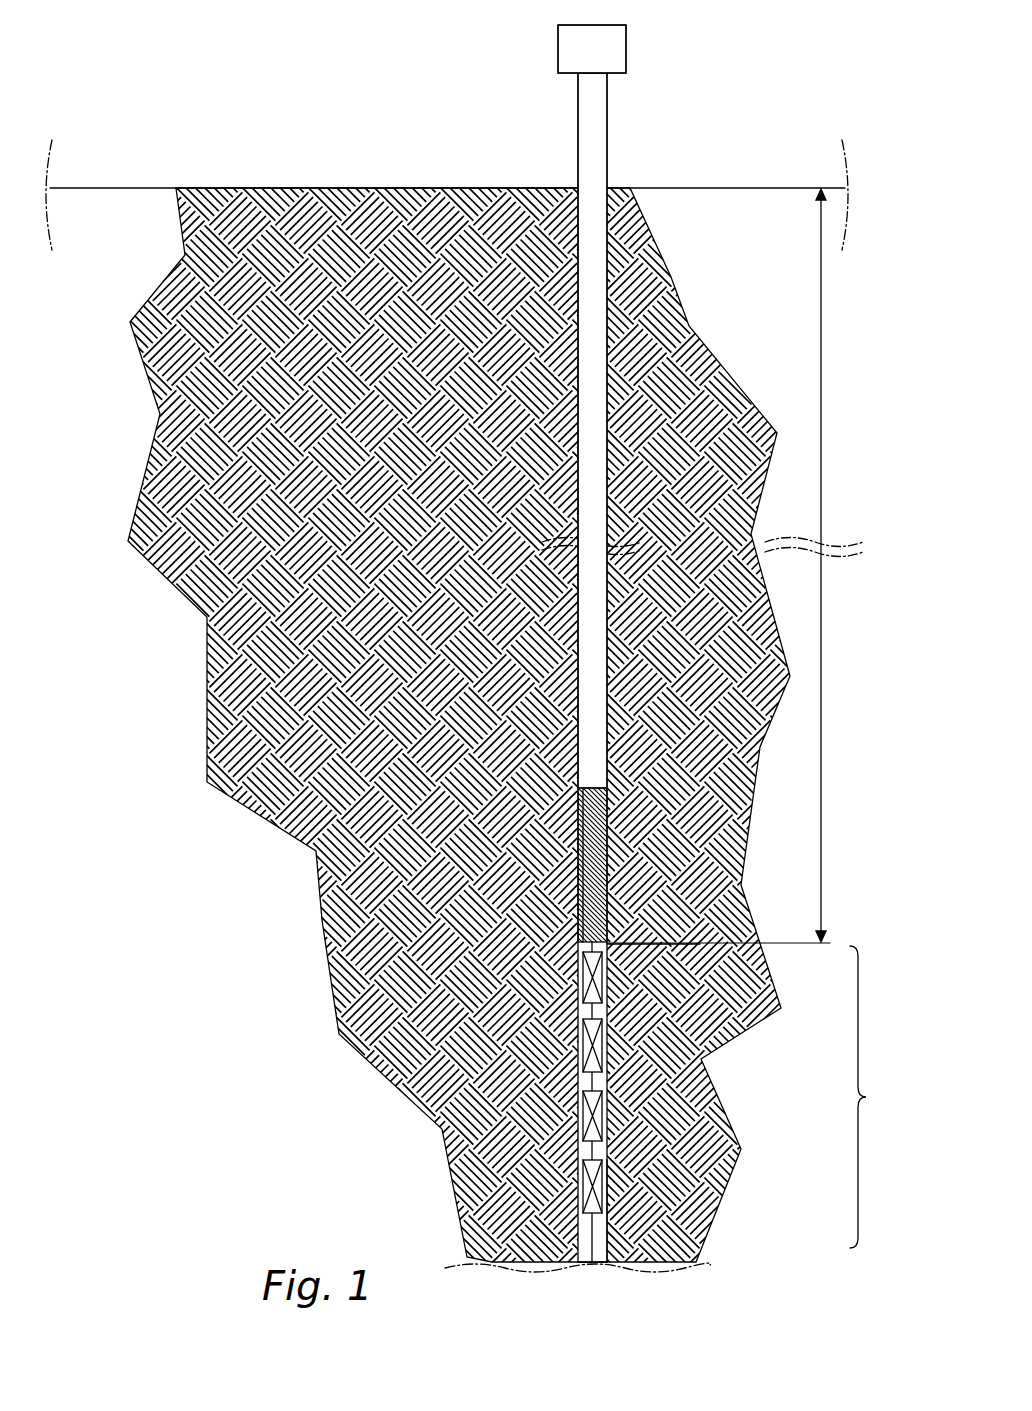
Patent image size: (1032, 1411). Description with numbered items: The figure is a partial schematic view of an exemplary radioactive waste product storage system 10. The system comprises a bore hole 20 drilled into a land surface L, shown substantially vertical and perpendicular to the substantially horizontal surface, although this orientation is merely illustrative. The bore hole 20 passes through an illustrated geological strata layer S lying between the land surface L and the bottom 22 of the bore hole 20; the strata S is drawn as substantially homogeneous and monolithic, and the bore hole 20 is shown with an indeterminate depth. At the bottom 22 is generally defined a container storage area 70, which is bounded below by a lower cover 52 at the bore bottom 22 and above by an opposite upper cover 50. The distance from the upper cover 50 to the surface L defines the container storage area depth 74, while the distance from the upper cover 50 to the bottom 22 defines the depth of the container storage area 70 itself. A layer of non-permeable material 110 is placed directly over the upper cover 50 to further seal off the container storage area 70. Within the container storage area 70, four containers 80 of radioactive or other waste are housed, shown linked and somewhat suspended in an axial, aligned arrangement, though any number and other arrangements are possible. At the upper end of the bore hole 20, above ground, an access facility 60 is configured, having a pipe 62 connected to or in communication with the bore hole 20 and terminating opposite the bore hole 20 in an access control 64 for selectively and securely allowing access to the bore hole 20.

The radioactive waste product storage system 10 is at (708, 42).
The bore hole 20 is at (624, 290).
The bottom 22 is at (594, 1265).
The upper cover 50 is at (620, 952).
The lower cover 52 is at (607, 1222).
The access facility 60 is at (535, 80).
The pipe 62 is at (578, 131).
The access control 64 is at (626, 55).
The container storage area 70 is at (877, 1097).
The container storage area depth 74 is at (822, 360).
The containers 80 is at (573, 1046).
The non-permeable material 110 is at (581, 885).
The land surface L is at (252, 188).
The geological strata layer S is at (290, 688).